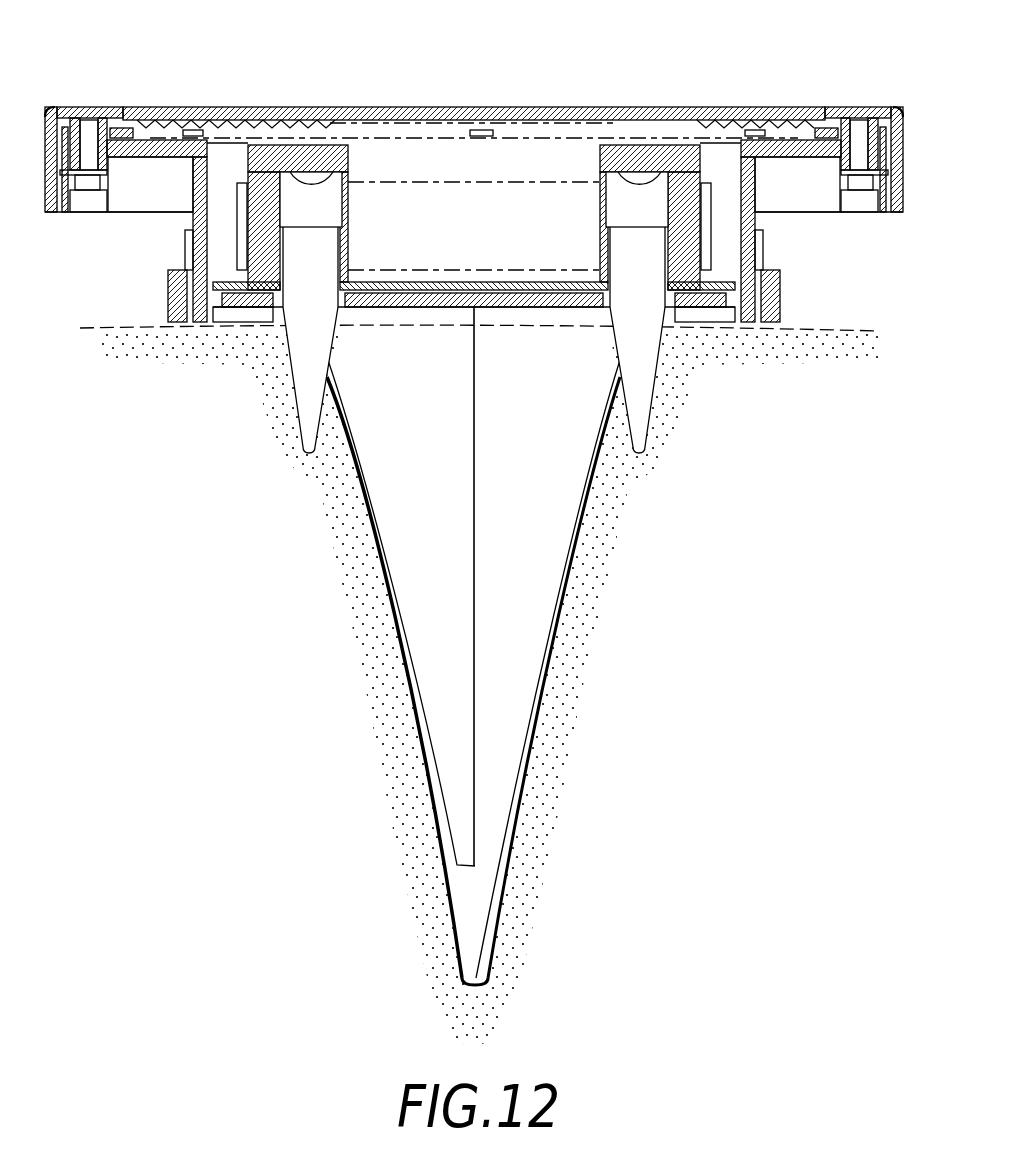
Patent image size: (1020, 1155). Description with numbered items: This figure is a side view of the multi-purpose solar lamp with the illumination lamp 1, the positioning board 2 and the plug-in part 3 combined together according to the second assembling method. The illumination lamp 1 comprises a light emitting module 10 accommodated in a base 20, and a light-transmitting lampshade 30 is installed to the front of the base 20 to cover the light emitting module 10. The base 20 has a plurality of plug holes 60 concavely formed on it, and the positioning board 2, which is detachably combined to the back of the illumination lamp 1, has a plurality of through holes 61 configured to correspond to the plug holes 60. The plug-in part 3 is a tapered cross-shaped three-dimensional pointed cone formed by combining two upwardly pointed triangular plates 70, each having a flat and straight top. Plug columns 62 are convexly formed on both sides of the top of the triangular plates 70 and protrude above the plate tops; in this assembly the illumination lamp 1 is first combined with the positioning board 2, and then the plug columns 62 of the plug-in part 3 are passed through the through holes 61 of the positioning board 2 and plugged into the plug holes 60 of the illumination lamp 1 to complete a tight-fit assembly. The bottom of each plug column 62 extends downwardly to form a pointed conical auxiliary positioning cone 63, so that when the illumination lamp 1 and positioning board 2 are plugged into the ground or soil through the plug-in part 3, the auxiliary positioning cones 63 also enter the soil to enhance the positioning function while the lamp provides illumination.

The illumination lamp 1 is at (474, 492).
The positioning board 2 is at (478, 274).
The plug-in part 3 is at (474, 646).
The light emitting module 10 is at (420, 120).
The base 20 is at (188, 232).
The light-transmitting lampshade 30 is at (276, 107).
The plug hole 60 is at (323, 150).
The through hole 61 is at (293, 355).
The plug column 62 is at (256, 298).
The auxiliary positioning cone 63 is at (299, 424).
The triangular plate 70 is at (382, 540).